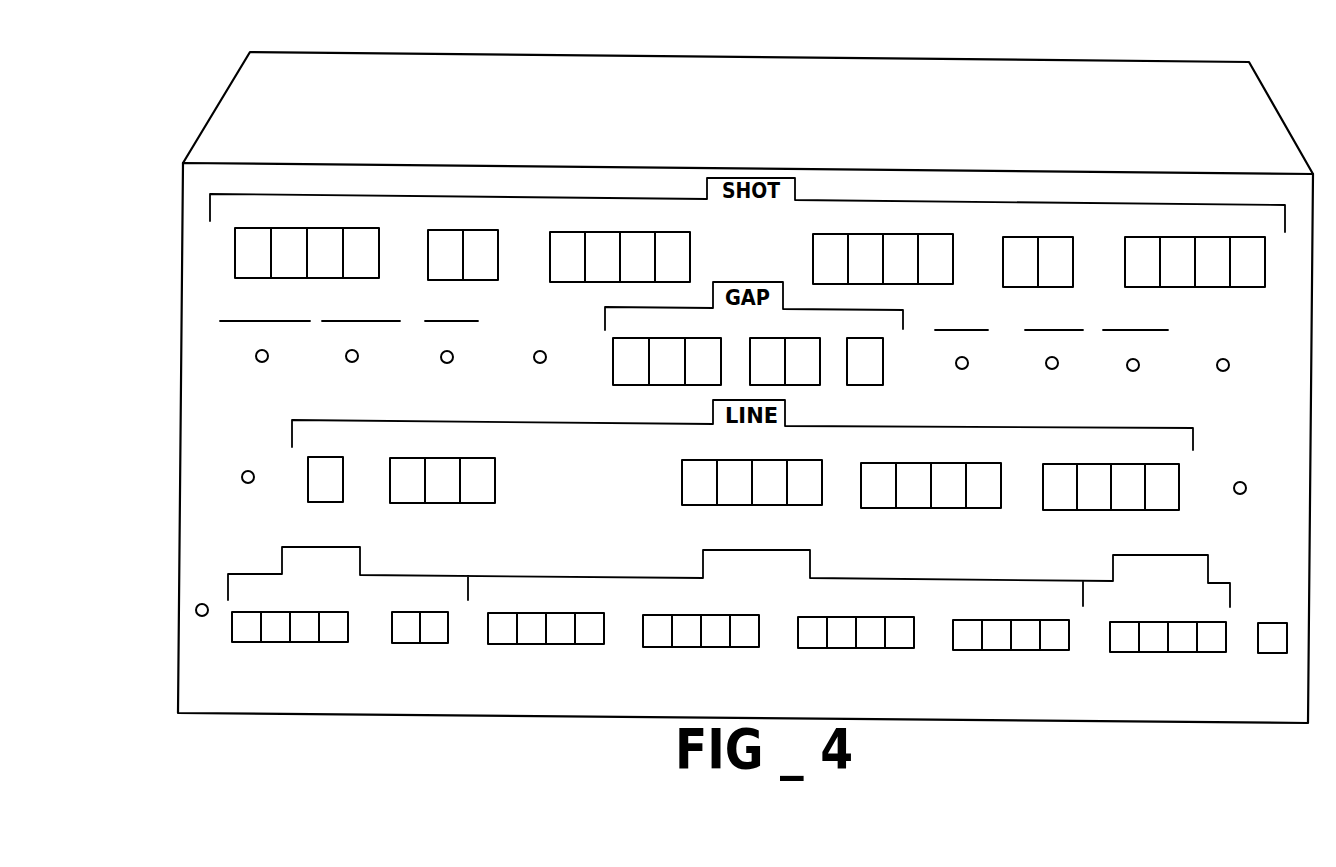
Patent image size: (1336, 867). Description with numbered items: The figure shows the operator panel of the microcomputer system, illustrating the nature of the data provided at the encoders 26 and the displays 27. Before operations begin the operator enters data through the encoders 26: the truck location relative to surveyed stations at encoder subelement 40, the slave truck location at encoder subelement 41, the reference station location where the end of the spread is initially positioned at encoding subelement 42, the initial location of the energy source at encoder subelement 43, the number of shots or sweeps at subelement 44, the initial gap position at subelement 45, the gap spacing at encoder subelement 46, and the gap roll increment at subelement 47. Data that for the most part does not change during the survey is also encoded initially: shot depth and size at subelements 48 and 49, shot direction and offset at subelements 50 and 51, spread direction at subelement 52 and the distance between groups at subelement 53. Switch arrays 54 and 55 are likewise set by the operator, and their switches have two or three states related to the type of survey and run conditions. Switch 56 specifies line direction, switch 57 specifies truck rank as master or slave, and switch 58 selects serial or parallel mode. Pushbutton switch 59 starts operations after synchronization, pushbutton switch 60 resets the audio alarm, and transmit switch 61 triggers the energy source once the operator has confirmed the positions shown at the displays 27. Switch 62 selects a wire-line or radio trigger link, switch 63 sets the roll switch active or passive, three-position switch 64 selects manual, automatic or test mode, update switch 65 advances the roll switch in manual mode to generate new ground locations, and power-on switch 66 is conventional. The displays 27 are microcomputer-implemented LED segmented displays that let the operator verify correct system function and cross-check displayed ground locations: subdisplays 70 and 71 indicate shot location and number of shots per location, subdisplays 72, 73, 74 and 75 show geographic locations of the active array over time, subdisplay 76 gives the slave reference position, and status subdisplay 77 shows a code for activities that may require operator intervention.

The encoders 26 is at (1270, 158).
The displays 27 is at (1058, 667).
The encoder subelement 40 is at (692, 505).
The encoder subelement 41 is at (888, 508).
The encoding subelement 42 is at (1056, 511).
The encoder subelement 43 is at (366, 229).
The encoder subelement 44 is at (490, 230).
The encoder subelement 45 is at (675, 340).
The encoder subelement 46 is at (790, 386).
The encoder subelement 47 is at (858, 386).
The encoder subelement 48 is at (668, 233).
The encoder subelement 49 is at (922, 235).
The encoder subelement 50 is at (1065, 238).
The encoder subelement 51 is at (1245, 238).
The encoder subelement 52 is at (343, 478).
The encoder subelement 53 is at (430, 503).
The switch array 54 is at (216, 360).
The switch array 55 is at (1255, 369).
The switch 56 is at (268, 356).
The switch 57 is at (358, 356).
The switch 58 is at (453, 357).
The pushbutton switch 59 is at (546, 357).
The pushbutton switch 60 is at (241, 475).
The transmit switch 61 is at (196, 610).
The switch 62 is at (968, 363).
The switch 63 is at (1058, 363).
The three-position switch 64 is at (1126, 369).
The update switch 65 is at (1224, 371).
The power-on switch 66 is at (1247, 493).
The subdisplay 70 is at (333, 644).
The subdisplay 71 is at (430, 645).
The subdisplay 72 is at (563, 647).
The subdisplay 73 is at (718, 649).
The subdisplay 74 is at (862, 650).
The subdisplay 75 is at (1013, 652).
The subdisplay 76 is at (1148, 652).
The status subdisplay 77 is at (1272, 620).